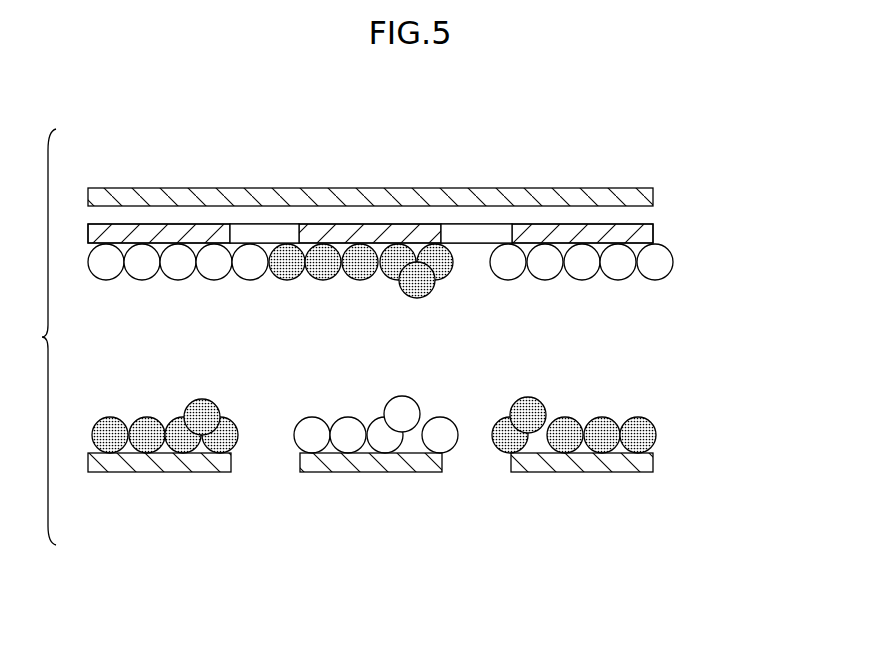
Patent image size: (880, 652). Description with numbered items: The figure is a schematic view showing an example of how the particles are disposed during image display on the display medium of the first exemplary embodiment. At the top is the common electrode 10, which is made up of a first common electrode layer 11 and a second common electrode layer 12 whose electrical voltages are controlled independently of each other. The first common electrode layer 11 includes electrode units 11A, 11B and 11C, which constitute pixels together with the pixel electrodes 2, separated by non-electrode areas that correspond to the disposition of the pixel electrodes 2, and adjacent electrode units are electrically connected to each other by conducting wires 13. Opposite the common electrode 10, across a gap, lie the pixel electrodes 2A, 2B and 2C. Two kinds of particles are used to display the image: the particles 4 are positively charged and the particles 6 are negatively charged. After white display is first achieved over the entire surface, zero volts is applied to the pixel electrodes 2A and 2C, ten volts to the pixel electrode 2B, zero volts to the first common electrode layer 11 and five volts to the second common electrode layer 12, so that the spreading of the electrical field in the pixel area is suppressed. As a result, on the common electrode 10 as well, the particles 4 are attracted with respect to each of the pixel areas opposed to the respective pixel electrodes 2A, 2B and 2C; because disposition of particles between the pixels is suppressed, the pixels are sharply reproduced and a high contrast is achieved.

The pixel electrodes 2 is at (410, 488).
The pixel electrode 2A is at (160, 462).
The pixel electrode 2B is at (370, 462).
The pixel electrode 2C is at (582, 462).
The particles 4 is at (364, 270).
The particles 6 is at (144, 270).
The common electrode 10 is at (444, 192).
The first common electrode layer 11 is at (418, 192).
The electrode unit 11A is at (164, 232).
The electrode unit 11B is at (373, 232).
The electrode unit 11C is at (586, 232).
The second common electrode layer 12 is at (660, 193).
The conducting wires 13 is at (269, 234).